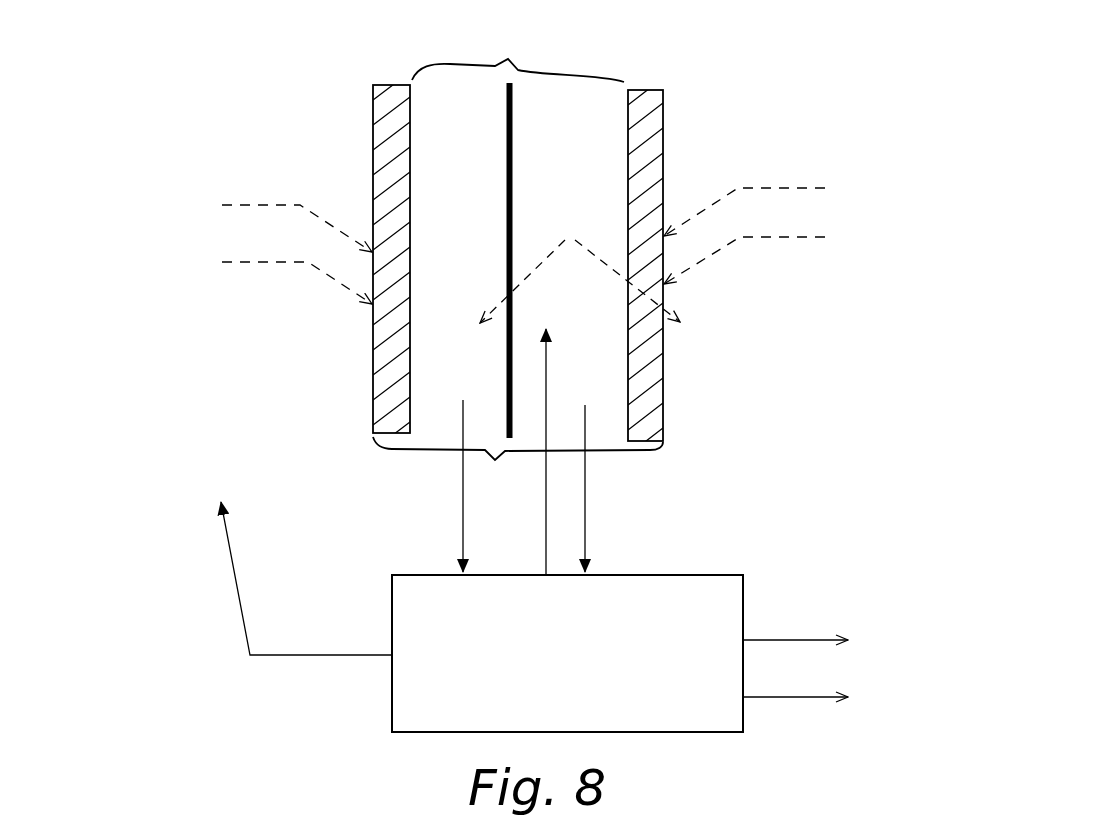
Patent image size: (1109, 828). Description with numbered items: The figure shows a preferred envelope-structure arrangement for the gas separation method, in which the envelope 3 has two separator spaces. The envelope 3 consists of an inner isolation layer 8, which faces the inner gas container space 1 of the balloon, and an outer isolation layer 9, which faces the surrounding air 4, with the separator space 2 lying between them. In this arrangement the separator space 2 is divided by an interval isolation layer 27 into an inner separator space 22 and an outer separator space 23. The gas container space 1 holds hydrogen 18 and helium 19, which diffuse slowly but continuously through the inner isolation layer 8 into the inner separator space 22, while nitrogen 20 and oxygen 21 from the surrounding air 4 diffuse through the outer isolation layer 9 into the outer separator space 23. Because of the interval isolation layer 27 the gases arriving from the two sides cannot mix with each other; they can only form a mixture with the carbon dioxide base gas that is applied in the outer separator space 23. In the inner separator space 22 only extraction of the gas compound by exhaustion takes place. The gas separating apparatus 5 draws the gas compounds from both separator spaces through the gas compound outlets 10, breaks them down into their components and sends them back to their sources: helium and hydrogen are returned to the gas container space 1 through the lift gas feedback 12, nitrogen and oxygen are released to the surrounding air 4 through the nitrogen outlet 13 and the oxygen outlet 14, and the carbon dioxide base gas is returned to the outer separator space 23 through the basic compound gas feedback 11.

The inner gas container space 1 is at (263, 160).
The separator space 2 is at (518, 50).
The envelope 3 is at (759, 143).
The surrounding air 4 is at (518, 468).
The gas separating apparatus 5 is at (567, 653).
The inner isolation layer 8 is at (373, 388).
The outer isolation layer 9 is at (665, 392).
The gas compound outlet 10 is at (526, 456).
The basic compound gas feedback 11 is at (548, 439).
The lift gas feedback 12 is at (297, 556).
The nitrogen outlet 13 is at (813, 633).
The oxygen outlet 14 is at (813, 692).
The hydrogen 18 is at (277, 214).
The helium 19 is at (277, 270).
The nitrogen 20 is at (762, 200).
The oxygen 21 is at (762, 246).
The inner separator space 22 is at (465, 112).
The outer separator space 23 is at (573, 125).
The interval isolation layer 27 is at (513, 400).